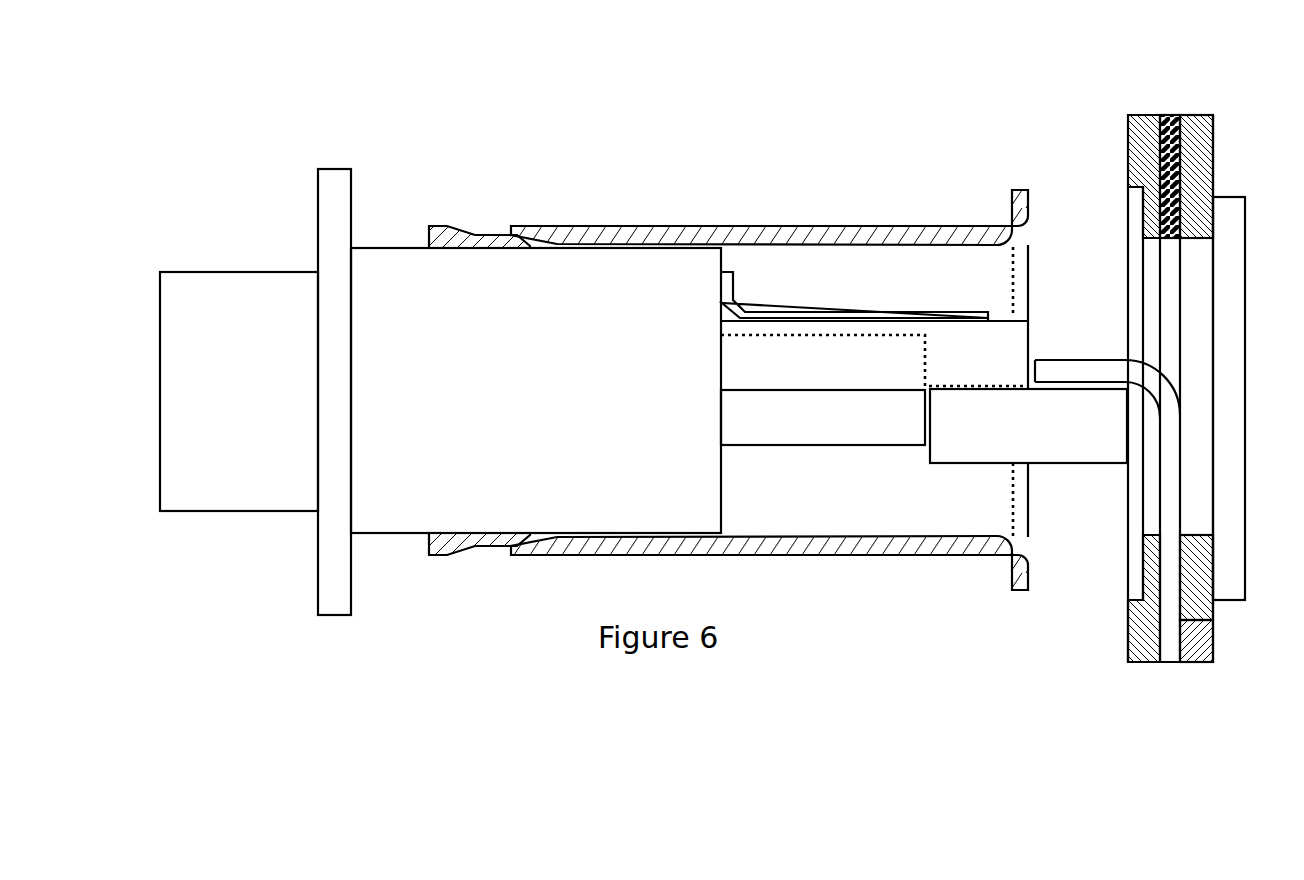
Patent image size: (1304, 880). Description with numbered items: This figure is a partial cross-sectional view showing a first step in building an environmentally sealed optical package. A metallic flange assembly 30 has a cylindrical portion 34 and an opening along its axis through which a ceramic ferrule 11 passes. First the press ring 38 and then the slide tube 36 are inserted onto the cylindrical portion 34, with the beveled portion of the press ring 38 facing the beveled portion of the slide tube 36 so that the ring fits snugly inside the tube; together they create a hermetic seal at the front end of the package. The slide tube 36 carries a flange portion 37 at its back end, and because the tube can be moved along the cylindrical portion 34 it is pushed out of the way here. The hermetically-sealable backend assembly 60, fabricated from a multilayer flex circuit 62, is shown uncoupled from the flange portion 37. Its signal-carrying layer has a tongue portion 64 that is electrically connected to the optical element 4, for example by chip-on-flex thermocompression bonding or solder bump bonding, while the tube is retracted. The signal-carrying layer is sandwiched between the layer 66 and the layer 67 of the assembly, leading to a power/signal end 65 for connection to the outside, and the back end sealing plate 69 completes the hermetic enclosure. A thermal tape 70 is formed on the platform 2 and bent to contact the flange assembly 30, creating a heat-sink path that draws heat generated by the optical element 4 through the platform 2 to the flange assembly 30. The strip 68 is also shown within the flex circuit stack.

The flange assembly 30 is at (352, 210).
The cylindrical portion 34 is at (522, 404).
The press ring 38 is at (455, 549).
The slide tube 36 is at (833, 557).
The flange portion 37 is at (1030, 578).
The thermal tape 70 is at (855, 312).
The platform 2 is at (969, 370).
The ceramic ferrule 11 is at (814, 432).
The optical element 4 is at (1025, 439).
The tongue portion 64 is at (1062, 360).
The hermetically-sealable backend assembly 60 is at (1068, 182).
The multilayer flex circuit 62 is at (1127, 168).
The seal strip 68 is at (1168, 115).
The layer 66 is at (1147, 664).
The power/signal end 65 is at (1185, 620).
The layer 67 is at (1194, 664).
The back end sealing plate 69 is at (1247, 395).